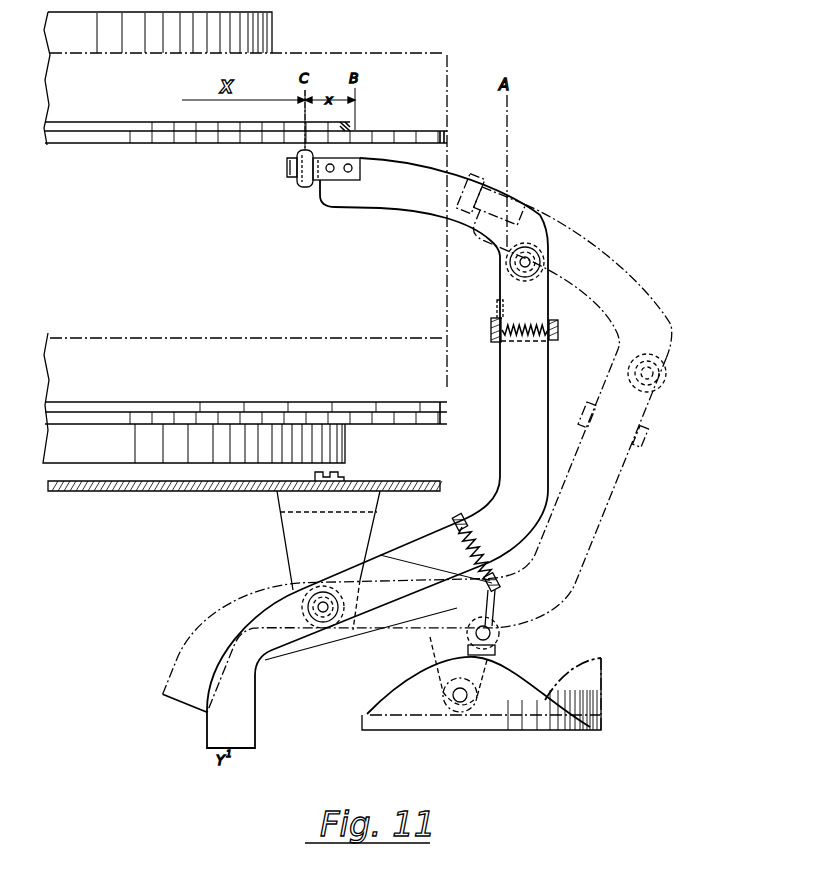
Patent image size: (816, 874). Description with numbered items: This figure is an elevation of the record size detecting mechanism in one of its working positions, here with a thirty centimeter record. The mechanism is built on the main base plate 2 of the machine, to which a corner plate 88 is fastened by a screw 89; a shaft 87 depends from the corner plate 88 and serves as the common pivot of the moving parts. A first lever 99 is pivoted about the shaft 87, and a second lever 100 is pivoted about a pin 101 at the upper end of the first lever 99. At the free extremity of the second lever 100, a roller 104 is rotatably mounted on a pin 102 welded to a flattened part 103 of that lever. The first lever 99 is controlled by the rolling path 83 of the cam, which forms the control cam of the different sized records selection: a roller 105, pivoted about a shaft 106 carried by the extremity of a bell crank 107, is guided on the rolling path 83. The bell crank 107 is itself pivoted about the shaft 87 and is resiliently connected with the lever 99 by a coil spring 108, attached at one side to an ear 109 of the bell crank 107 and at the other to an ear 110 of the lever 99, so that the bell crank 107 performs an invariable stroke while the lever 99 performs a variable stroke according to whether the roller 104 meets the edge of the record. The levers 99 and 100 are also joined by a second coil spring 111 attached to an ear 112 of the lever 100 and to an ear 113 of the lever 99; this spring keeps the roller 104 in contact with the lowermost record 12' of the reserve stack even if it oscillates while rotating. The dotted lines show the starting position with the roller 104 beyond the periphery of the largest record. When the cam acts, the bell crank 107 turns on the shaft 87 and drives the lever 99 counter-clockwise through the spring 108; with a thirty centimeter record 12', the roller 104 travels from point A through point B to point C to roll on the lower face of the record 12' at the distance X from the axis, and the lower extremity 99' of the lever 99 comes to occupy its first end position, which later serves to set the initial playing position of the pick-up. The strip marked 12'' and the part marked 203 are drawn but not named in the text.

The main base plate 2 is at (203, 484).
The lowermost record 12' is at (266, 119).
The rack rod section 12'' is at (224, 109).
The rolling path 83 is at (555, 720).
The shaft 87 is at (318, 602).
The corner plate 88 is at (313, 553).
The screw 89 is at (343, 478).
The first lever 99 is at (419, 528).
The lower extremity of the first lever 99' is at (206, 692).
The second lever 100 is at (440, 197).
The pin 101 is at (533, 258).
The pin 102 is at (292, 170).
The flattened part 103 is at (343, 178).
The roller 104 is at (298, 186).
The roller 105 is at (500, 647).
The shaft 106 is at (467, 645).
The bell crank 107 is at (452, 610).
The coil spring 108 is at (487, 578).
The ear 109 is at (465, 513).
The ear 110 is at (497, 585).
The second coil spring 111 is at (523, 328).
The ear 112 is at (556, 337).
The ear 113 is at (495, 338).
The stop 203 is at (500, 312).